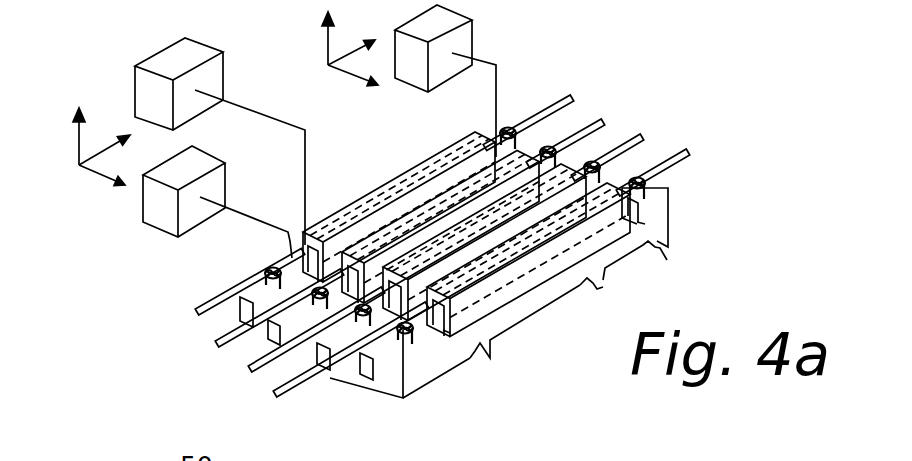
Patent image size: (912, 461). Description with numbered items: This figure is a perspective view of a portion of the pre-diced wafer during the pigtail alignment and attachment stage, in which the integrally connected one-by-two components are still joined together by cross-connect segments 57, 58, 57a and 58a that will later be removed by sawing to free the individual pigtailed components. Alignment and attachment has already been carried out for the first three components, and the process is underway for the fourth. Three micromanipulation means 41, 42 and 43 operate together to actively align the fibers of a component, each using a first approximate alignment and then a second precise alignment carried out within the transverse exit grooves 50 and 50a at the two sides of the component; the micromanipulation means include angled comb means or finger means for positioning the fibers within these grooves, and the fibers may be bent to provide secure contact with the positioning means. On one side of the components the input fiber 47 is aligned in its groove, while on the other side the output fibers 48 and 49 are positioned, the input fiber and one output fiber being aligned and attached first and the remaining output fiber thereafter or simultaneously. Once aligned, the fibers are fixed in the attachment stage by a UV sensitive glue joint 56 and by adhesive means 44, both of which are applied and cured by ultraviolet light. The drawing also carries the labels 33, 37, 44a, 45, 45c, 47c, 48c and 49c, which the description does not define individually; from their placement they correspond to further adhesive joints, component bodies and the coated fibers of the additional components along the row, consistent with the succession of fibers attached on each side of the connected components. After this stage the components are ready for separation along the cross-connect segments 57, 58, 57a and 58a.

The controller 33 is at (392, 7).
The sensor 37 is at (492, 0).
The micromanipulation means 41 is at (452, 68).
The micromanipulation means 42 is at (160, 218).
The micromanipulation means 43 is at (192, 55).
The adhesive means 44 is at (425, 330).
The connector 44a is at (633, 180).
The guide channel 45 is at (527, 242).
The guide channel 45c is at (388, 190).
The coated fiber 47 is at (690, 153).
The rail 47c is at (556, 100).
The coated fiber 48 is at (310, 385).
The rail 48c is at (212, 328).
The coated fiber 49 is at (262, 376).
The rail 49c is at (200, 302).
The transverse exit groove 50 is at (443, 330).
The transverse exit groove 50a is at (637, 222).
The UV sensitive glue joint 56 is at (445, 297).
The cross-connect segment 57 is at (410, 387).
The cross-connect segment 57a is at (667, 260).
The cross-connect segment 58 is at (492, 357).
The cross-connect segment 58a is at (603, 287).